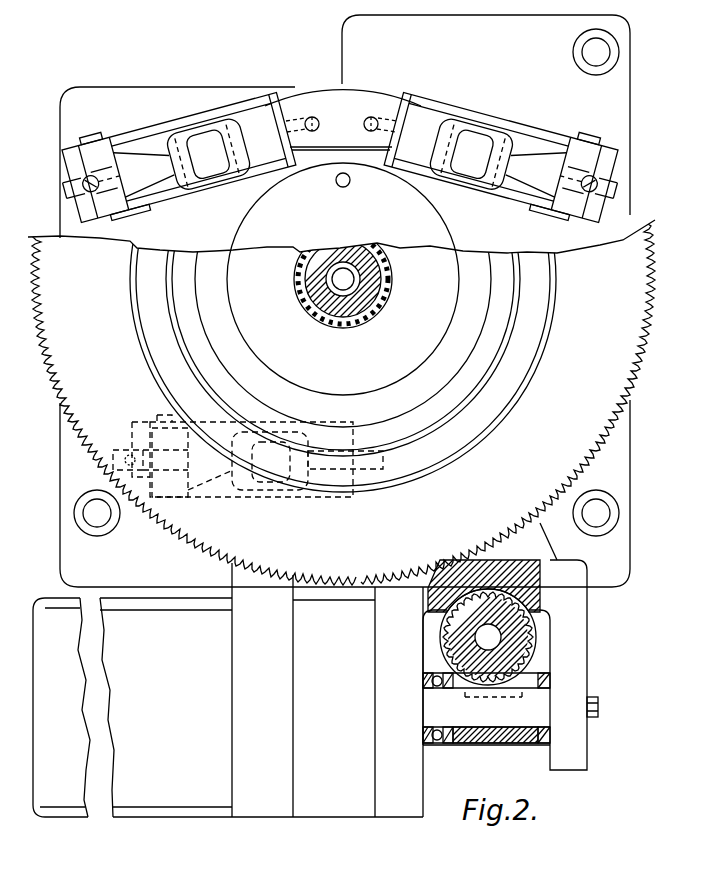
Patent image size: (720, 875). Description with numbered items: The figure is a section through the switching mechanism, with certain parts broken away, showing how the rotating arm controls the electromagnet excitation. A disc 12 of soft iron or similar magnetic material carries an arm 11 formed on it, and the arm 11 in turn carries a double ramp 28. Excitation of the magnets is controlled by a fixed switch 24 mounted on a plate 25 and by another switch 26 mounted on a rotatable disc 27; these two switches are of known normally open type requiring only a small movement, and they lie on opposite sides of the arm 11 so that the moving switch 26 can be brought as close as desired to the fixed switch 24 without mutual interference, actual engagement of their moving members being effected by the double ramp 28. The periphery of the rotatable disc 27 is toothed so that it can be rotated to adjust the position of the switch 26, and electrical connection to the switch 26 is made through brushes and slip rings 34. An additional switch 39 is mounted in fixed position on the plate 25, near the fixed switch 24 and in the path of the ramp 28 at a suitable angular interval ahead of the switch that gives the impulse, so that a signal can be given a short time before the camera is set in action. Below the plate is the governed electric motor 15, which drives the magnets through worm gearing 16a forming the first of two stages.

The plate 25 is at (173, 91).
The fixed switch 24 is at (208, 132).
The arm 11 is at (333, 147).
The double ramp 28 is at (320, 90).
The disc 12 is at (347, 157).
The additional switch 39 is at (483, 137).
The rotatable disc 27 is at (592, 390).
The slip rings 34 is at (418, 425).
The switch 26 is at (277, 488).
The governed electric motor 15 is at (190, 724).
The worm gearing 16a is at (520, 639).